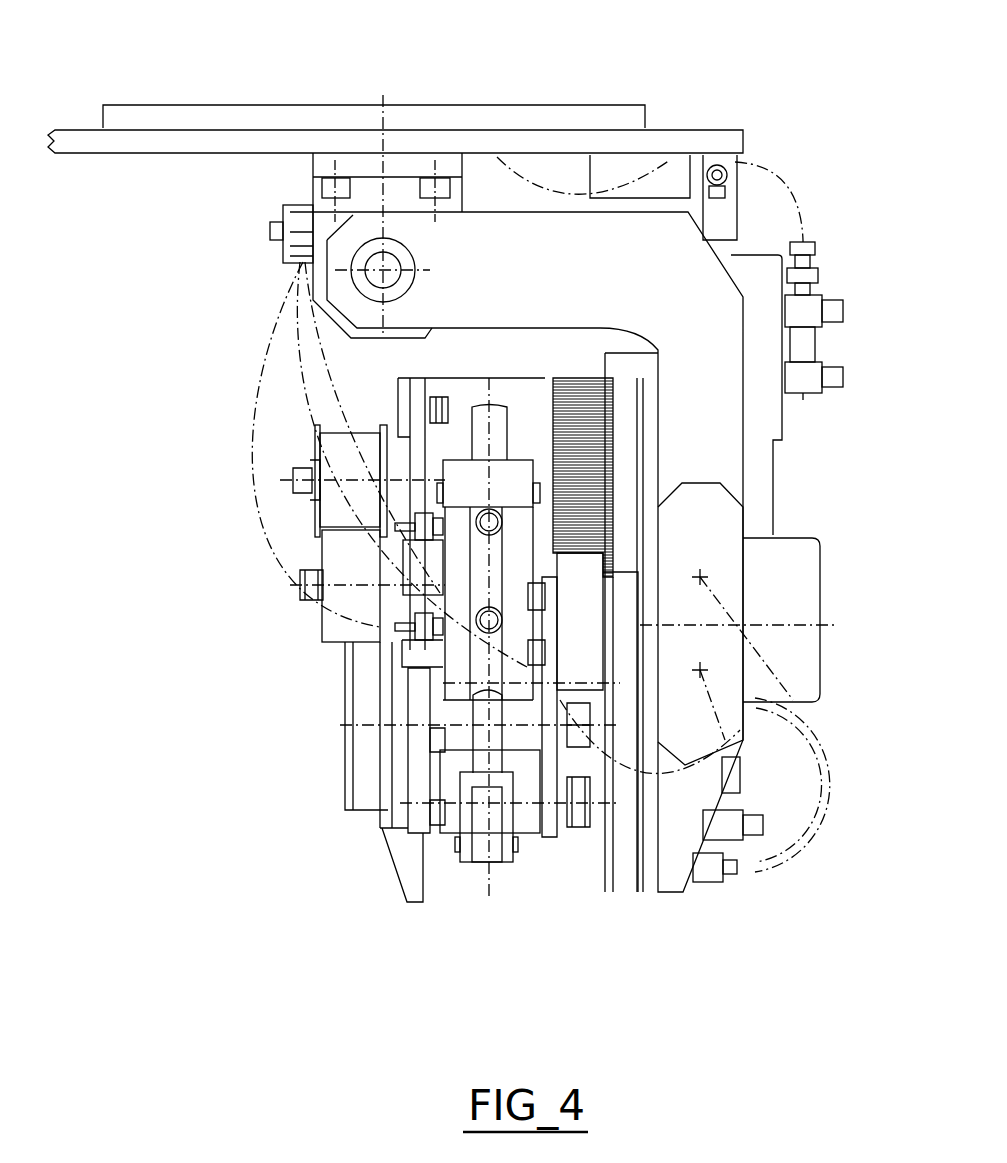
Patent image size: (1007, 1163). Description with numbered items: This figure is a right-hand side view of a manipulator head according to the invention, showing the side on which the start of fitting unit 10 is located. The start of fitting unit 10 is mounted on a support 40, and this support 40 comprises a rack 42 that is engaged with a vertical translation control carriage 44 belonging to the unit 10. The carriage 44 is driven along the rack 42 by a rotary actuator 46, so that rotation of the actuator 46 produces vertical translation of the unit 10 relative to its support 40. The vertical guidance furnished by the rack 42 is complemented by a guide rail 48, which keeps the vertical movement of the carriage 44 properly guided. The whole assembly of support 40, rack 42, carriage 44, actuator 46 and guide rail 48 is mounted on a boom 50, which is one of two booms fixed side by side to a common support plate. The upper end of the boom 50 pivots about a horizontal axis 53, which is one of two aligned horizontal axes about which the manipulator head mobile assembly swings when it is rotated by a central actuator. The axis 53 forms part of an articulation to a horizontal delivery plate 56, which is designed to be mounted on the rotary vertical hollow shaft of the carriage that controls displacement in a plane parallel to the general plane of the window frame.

The start of fitting unit 10 is at (295, 708).
The support 40 is at (523, 715).
The rack 42 is at (582, 492).
The vertical translation control carriage 44 is at (583, 642).
The rotary actuator 46 is at (702, 638).
The guide rail 48 is at (634, 370).
The boom 50 is at (682, 293).
The horizontal axis 53 is at (380, 266).
The horizontal delivery plate 56 is at (557, 150).